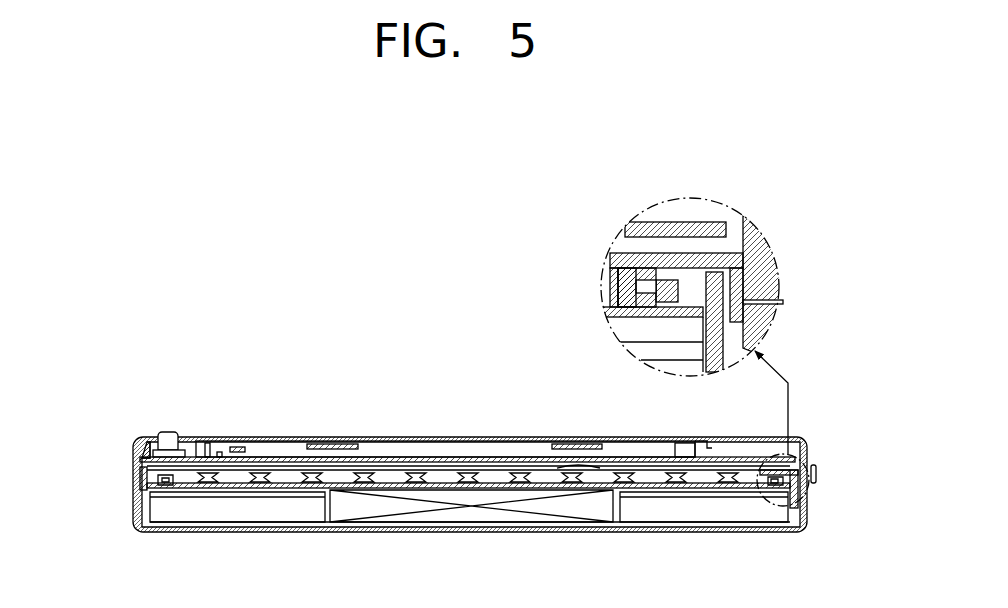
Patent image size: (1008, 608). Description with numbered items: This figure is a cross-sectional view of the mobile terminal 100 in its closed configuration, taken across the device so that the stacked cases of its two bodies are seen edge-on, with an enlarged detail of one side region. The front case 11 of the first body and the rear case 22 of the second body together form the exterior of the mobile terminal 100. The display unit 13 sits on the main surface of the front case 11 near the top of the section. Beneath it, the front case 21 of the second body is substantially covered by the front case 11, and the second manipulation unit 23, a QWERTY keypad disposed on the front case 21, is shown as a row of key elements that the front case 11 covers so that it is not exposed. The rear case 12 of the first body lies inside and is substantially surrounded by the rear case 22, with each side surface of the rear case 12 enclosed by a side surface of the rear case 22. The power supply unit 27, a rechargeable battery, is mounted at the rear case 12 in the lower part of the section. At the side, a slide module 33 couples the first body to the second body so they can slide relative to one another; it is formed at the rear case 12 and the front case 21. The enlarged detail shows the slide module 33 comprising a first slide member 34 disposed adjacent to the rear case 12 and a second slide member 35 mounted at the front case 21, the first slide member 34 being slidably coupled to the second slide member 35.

The mobile terminal 100 is at (217, 308).
The front case 11 is at (137, 458).
The rear case 12 is at (147, 497).
The display unit 13 is at (474, 441).
The front case 21 is at (143, 476).
The rear case 22 is at (142, 521).
The second manipulation unit 23 is at (399, 473).
The power supply unit 27 is at (512, 515).
The slide module 33 is at (631, 322).
The first slide member 34 is at (648, 283).
The second slide member 35 is at (626, 277).